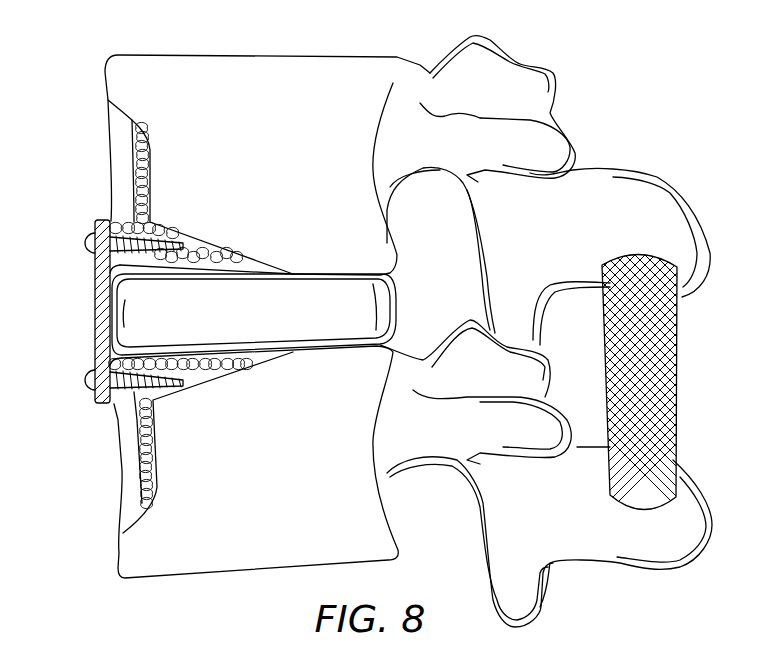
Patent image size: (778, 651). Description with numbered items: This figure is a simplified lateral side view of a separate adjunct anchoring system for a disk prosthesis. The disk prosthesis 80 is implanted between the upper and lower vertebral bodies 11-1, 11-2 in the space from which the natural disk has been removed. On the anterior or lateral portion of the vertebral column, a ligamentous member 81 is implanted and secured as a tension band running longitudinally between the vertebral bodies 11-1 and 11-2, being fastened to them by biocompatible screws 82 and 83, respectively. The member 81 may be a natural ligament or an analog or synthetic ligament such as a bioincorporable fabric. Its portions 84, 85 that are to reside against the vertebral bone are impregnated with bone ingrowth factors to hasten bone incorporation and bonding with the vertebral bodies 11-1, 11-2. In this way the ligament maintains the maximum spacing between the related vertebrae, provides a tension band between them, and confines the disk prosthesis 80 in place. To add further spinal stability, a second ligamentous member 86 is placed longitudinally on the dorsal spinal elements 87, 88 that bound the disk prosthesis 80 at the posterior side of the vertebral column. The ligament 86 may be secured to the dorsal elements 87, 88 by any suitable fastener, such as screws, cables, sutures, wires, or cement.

The vertebral body 11-1 is at (254, 70).
The vertebral body 11-2 is at (160, 563).
The disk prosthesis 80 is at (404, 292).
The ligamentous member 81 is at (97, 302).
The biocompatible screw 82 is at (82, 242).
The biocompatible screw 83 is at (82, 387).
The portion of the ligament 84 is at (147, 218).
The portion of the ligament 85 is at (142, 400).
The second ligamentous member 86 is at (678, 376).
The dorsal spinal element 87 is at (647, 202).
The dorsal spinal element 88 is at (610, 537).